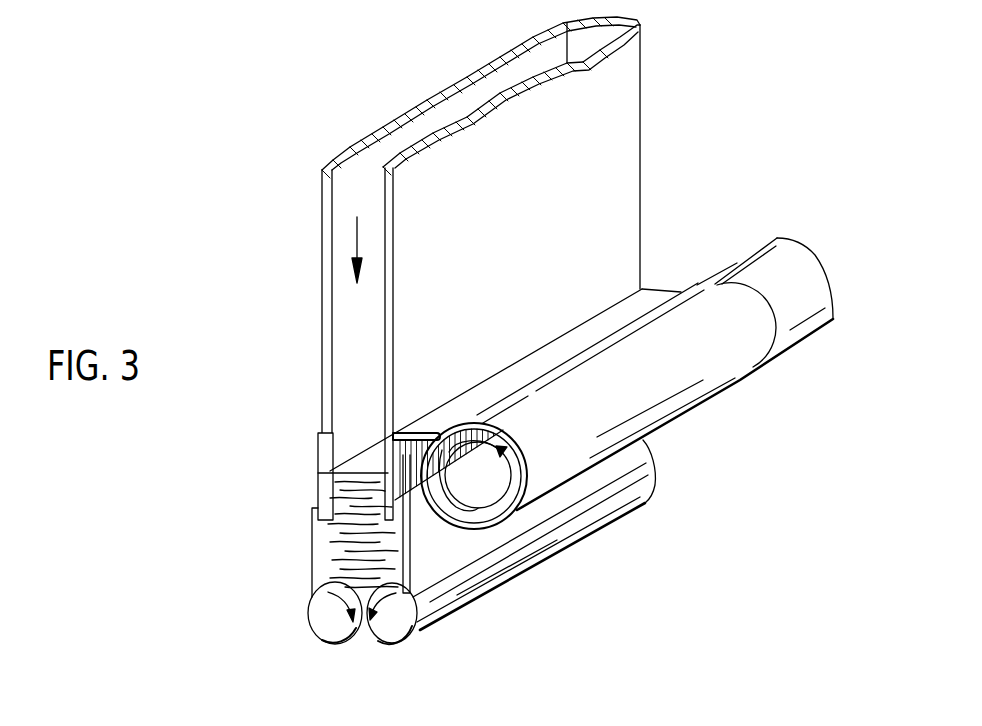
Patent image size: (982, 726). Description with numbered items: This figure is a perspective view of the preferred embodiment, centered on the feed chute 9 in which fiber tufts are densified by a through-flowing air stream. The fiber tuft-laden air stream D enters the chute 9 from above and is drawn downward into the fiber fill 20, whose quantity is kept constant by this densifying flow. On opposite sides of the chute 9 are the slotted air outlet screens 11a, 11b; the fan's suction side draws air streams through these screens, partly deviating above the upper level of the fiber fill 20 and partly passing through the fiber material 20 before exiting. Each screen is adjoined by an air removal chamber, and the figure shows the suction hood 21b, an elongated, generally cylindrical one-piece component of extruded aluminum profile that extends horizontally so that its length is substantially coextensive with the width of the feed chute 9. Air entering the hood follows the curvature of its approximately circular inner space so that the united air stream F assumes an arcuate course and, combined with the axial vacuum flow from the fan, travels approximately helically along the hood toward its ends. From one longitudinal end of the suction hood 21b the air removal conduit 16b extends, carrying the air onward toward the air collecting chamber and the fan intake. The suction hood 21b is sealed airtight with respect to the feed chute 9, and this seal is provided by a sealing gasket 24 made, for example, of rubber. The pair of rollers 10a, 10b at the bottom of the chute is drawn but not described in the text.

The feed chute 9 is at (357, 338).
The fiber tuft-laden air stream D is at (357, 235).
The sealing gasket 24 is at (417, 432).
The air stream F is at (508, 470).
The suction hood 21b is at (573, 443).
The air removal conduit 16b is at (787, 333).
The air outlet screen 11a is at (318, 473).
The air outlet screen 11b is at (345, 497).
The fiber fill 20 is at (352, 540).
The roller 10a is at (330, 624).
The roller 10b is at (427, 630).